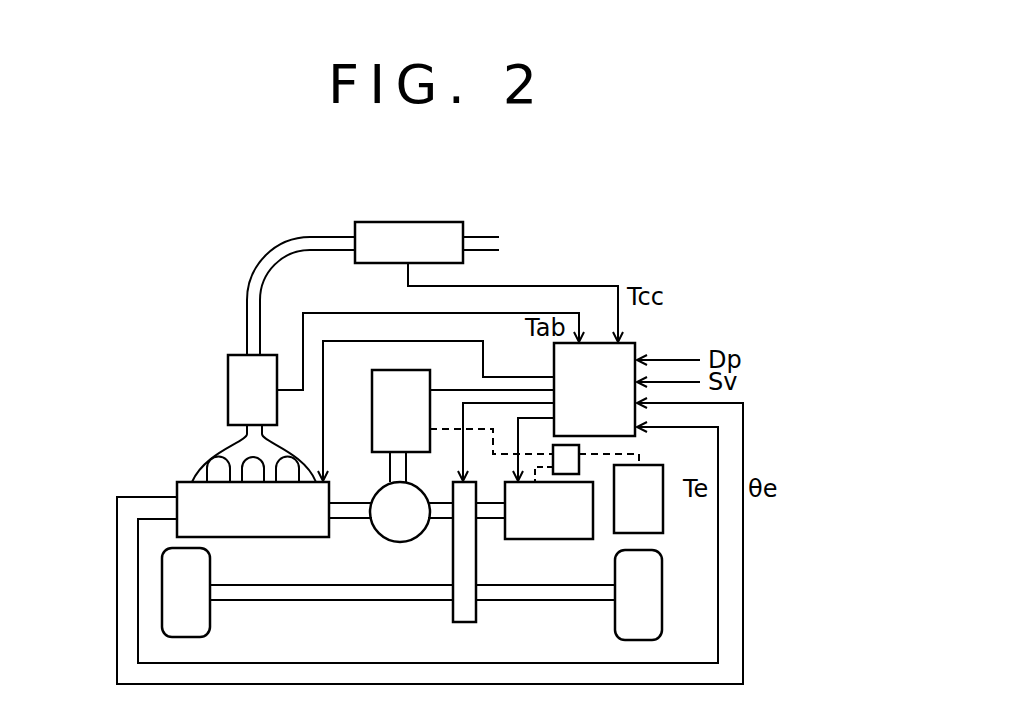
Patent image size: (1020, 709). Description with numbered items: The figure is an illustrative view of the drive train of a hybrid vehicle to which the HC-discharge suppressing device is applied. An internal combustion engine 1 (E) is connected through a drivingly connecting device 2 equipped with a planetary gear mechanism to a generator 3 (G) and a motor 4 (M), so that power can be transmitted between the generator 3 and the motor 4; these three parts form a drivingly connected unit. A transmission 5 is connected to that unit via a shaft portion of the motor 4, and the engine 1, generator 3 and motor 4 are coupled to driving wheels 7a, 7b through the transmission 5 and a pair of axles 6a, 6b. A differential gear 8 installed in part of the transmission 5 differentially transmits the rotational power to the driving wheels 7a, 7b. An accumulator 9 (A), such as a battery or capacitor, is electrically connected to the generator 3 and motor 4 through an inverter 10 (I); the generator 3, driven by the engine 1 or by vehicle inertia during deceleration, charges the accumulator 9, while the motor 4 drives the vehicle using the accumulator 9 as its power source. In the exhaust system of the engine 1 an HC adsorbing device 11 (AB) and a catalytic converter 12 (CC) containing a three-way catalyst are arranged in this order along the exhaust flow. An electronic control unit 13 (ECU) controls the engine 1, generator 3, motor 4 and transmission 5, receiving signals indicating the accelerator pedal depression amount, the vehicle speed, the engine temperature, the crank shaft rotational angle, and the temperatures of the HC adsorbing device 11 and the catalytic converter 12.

The internal combustion engine 1 is at (228, 537).
The drivingly connecting device 2 is at (395, 544).
The generator 3 is at (372, 400).
The motor 4 is at (548, 540).
The transmission 5 is at (476, 538).
The axle 6a is at (385, 586).
The axle 6b is at (515, 586).
The driving wheel 7a is at (210, 620).
The driving wheel 7b is at (615, 608).
The differential gear 8 is at (463, 622).
The accumulator 9 is at (663, 505).
The inverter 10 is at (579, 451).
The HC adsorbing device 11 is at (228, 395).
The catalytic converter 12 is at (410, 222).
The electronic control unit 13 is at (637, 352).